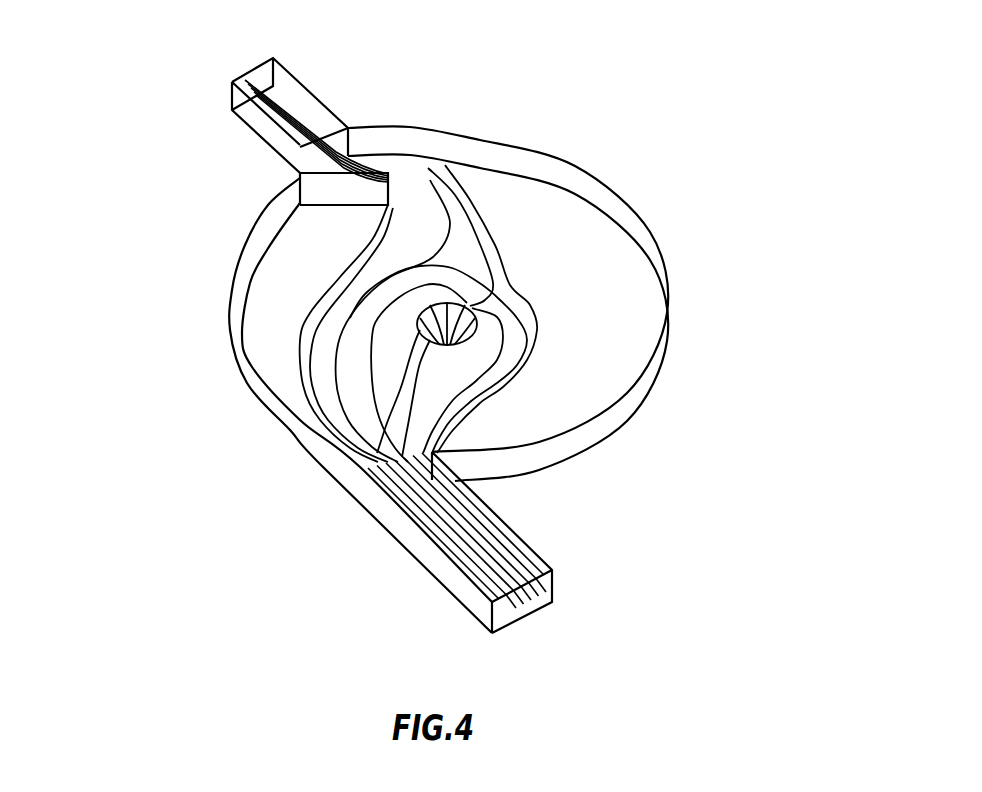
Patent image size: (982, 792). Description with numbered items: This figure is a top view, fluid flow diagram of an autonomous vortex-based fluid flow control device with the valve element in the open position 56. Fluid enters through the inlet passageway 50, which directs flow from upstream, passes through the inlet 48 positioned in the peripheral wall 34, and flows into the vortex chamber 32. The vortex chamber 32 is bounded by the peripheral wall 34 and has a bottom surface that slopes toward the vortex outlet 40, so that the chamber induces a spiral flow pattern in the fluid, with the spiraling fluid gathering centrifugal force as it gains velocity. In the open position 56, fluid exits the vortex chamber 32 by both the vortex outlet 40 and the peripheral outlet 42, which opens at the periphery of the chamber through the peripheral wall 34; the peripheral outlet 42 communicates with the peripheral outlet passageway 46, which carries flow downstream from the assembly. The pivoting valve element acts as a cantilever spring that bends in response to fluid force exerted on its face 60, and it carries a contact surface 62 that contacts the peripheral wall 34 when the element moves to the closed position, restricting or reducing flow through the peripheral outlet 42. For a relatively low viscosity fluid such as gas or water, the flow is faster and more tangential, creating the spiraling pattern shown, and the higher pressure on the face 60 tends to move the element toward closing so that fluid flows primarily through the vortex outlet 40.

The vortex chamber 32 is at (620, 340).
The peripheral wall 34 is at (622, 407).
The vortex outlet 40 is at (470, 305).
The peripheral outlet 42 is at (323, 150).
The peripheral outlet passageway 46 is at (240, 118).
The inlet 48 is at (395, 475).
The inlet passageway 50 is at (512, 543).
The open position 56 is at (237, 192).
The face 60 is at (330, 198).
The contact surface 62 is at (395, 175).